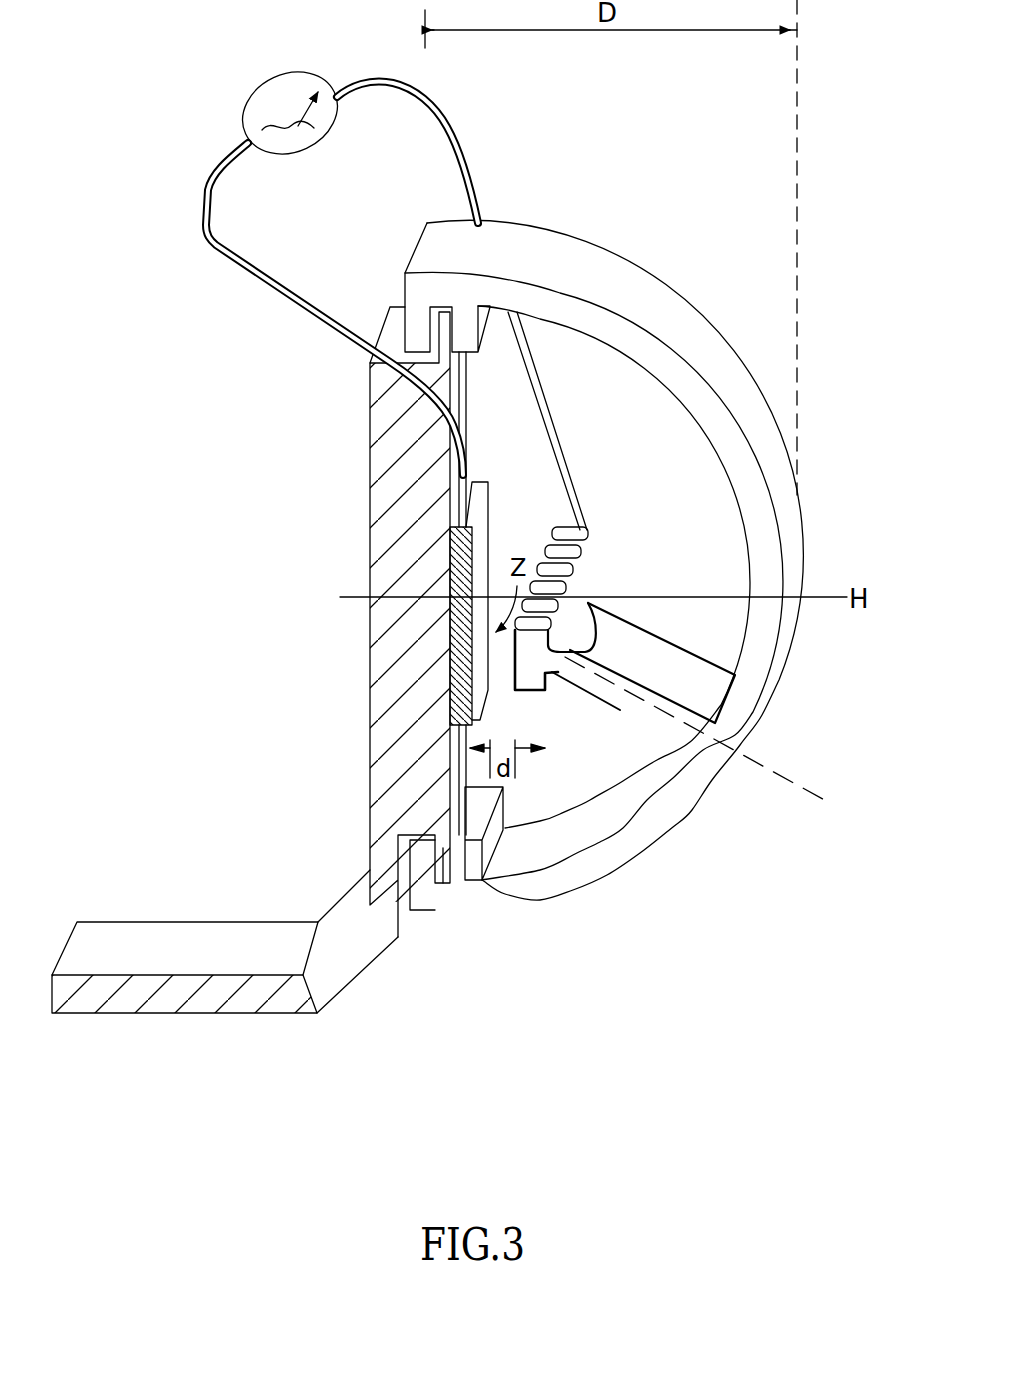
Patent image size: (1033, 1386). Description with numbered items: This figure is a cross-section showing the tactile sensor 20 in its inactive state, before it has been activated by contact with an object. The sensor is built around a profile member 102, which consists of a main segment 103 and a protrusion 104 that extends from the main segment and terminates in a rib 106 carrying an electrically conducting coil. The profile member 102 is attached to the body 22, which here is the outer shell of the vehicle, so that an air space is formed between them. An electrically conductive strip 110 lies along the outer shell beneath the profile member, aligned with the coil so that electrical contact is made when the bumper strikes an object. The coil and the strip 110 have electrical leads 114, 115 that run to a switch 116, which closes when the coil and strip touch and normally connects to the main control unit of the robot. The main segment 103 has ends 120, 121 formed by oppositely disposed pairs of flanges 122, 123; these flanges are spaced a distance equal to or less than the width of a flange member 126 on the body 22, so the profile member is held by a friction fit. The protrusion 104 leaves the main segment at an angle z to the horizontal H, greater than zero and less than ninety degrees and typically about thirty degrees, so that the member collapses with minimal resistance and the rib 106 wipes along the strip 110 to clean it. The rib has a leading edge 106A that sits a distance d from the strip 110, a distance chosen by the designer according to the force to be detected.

The tactile sensor 20 is at (867, 262).
The body 22 is at (403, 555).
The profile member 102 is at (652, 262).
The main segment 103 is at (733, 350).
The protrusion 104 is at (683, 683).
The rib 106 is at (560, 653).
The leading edge 106A is at (515, 703).
The electrically conductive strip 110 is at (456, 692).
The electrical lead 114 is at (436, 122).
The electrical lead 115 is at (205, 227).
The switch 116 is at (278, 72).
The end 120 is at (452, 245).
The end 121 is at (422, 913).
The flange 122 is at (470, 858).
The flange 123 is at (372, 866).
The flange member 126 is at (444, 886).